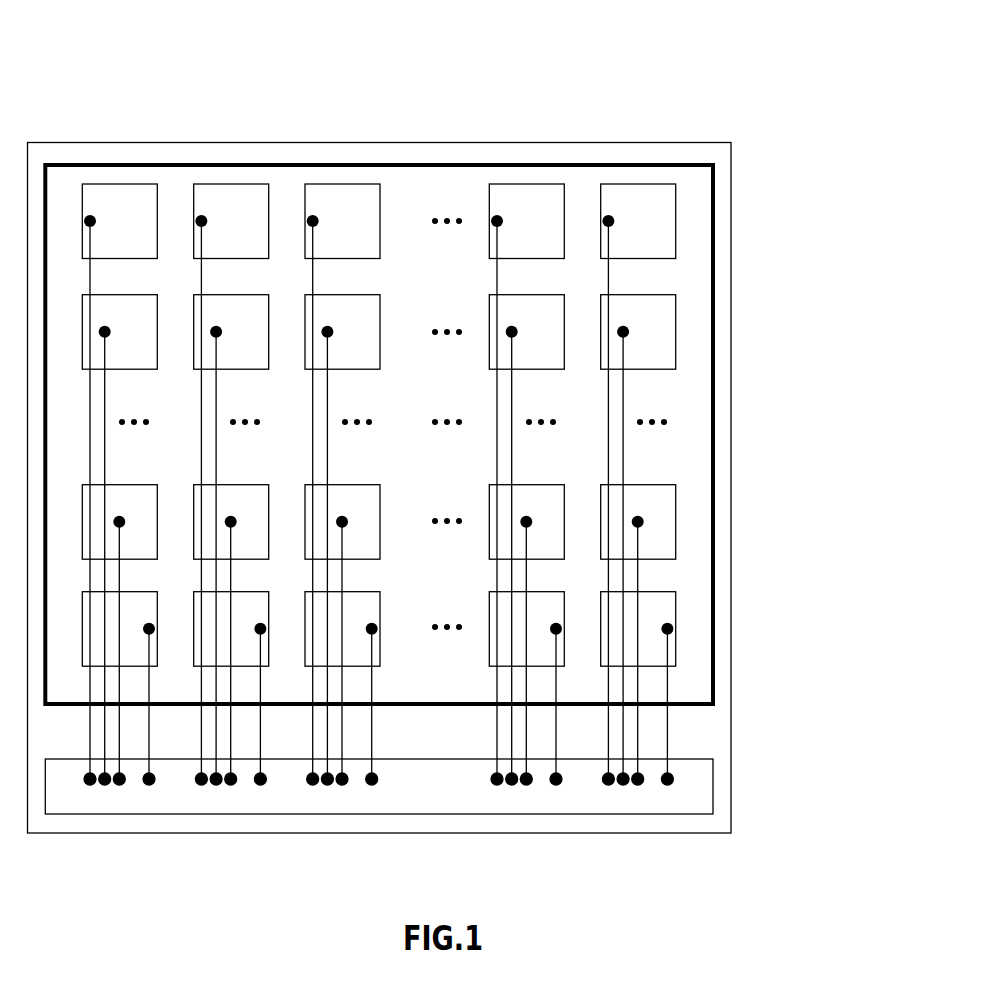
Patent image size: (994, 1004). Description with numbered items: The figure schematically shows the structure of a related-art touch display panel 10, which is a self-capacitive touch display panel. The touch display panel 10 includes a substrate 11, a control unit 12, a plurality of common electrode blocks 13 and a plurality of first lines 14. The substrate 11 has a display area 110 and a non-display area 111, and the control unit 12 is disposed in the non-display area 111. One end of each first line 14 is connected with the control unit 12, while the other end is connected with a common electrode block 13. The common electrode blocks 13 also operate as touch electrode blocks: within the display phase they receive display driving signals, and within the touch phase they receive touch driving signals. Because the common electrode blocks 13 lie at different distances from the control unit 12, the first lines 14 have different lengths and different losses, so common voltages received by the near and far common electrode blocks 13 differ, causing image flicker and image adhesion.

The touch display panel 10 is at (66, 53).
The substrate 11 is at (728, 188).
The display area 110 is at (695, 287).
The common electrode blocks 13 is at (658, 343).
The first lines 14 is at (668, 683).
The non-display area 111 is at (695, 732).
The control unit 12 is at (695, 802).